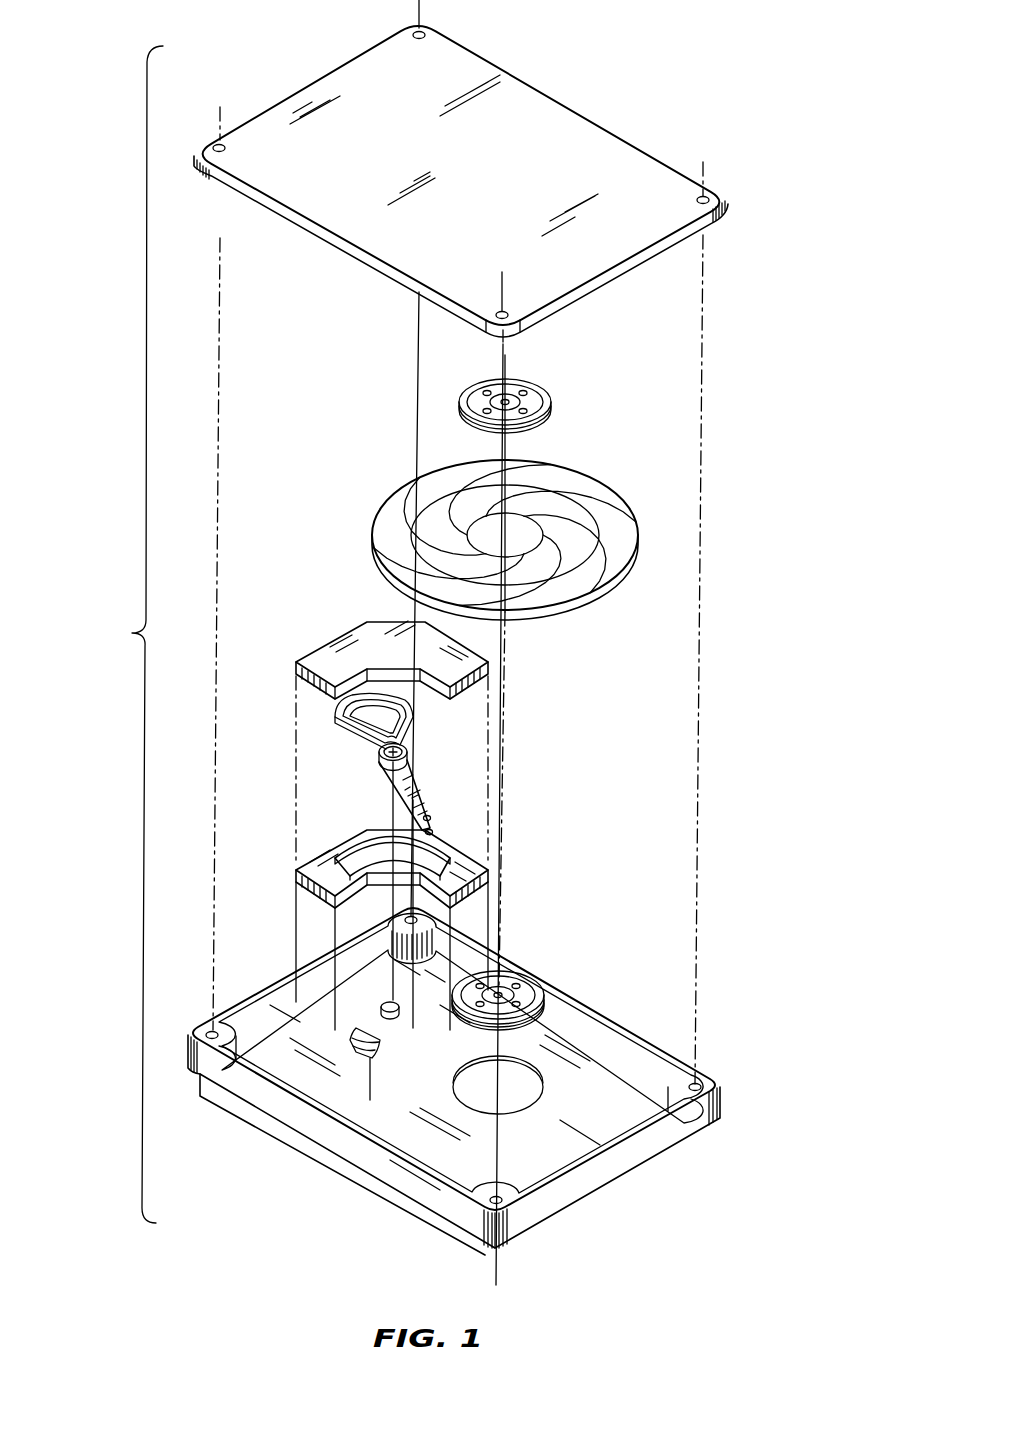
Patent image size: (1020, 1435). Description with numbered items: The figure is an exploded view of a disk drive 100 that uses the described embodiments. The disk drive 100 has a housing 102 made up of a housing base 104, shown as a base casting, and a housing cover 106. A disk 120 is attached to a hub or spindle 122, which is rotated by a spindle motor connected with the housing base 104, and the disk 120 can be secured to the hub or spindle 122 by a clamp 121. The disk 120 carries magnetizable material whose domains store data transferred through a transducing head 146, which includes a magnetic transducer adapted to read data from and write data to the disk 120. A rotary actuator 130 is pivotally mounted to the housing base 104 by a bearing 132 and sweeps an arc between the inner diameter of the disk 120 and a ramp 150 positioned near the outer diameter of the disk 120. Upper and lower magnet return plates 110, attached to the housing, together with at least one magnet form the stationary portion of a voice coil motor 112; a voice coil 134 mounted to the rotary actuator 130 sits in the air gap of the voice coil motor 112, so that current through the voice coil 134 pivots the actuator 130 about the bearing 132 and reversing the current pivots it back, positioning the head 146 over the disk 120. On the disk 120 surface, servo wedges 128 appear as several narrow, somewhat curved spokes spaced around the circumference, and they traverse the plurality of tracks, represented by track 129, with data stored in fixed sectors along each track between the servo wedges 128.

The disk drive 100 is at (727, 515).
The housing 102 is at (128, 634).
The housing base 104 is at (454, 1081).
The housing cover 106 is at (552, 108).
The upper and lower magnet return plates 110 is at (318, 690).
The voice coil motor 112 is at (389, 746).
The disk 120 is at (526, 527).
The clamp 121 is at (535, 394).
The hub or spindle 122 is at (523, 978).
The servo wedges 128 is at (637, 544).
The track 129 is at (592, 521).
The rotary actuator 130 is at (441, 764).
The bearing 132 is at (408, 752).
The voice coil 134 is at (352, 735).
The transducing head 146 is at (433, 817).
The ramp 150 is at (389, 1053).